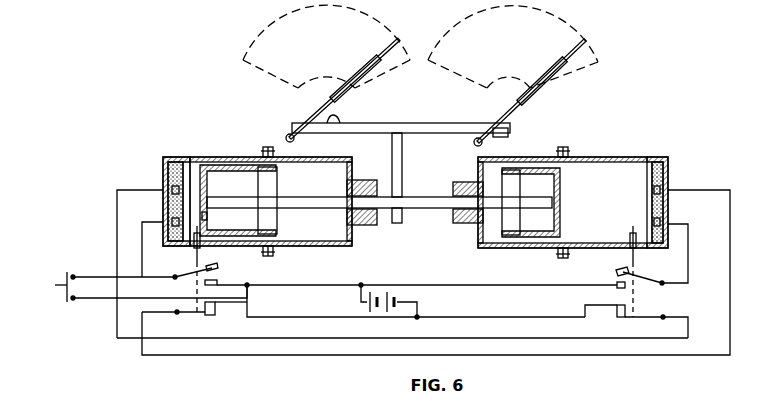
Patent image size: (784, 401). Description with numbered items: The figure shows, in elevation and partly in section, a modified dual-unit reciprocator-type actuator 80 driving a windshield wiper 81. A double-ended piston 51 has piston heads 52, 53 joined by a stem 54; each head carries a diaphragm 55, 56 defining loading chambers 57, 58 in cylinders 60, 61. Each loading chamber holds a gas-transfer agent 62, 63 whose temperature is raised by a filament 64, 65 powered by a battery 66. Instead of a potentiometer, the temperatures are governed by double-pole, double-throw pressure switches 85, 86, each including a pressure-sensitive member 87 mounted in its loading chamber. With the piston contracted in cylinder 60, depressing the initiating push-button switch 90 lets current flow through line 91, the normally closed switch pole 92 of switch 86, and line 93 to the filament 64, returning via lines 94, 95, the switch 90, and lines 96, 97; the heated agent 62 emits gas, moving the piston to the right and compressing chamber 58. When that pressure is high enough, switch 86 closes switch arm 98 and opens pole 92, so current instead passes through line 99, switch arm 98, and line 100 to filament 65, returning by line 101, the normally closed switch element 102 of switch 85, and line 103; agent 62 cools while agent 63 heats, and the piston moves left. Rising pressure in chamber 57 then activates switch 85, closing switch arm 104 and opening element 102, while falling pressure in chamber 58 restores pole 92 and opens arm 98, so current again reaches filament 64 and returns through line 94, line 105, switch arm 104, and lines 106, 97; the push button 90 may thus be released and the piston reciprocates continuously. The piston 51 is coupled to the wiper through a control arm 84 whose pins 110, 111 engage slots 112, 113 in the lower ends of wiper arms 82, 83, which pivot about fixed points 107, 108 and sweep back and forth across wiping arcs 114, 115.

The double-ended piston 51 is at (422, 209).
The piston head 52 is at (214, 186).
The piston head 53 is at (555, 192).
The stem 54 is at (326, 212).
The diaphragm 55 is at (260, 153).
The diaphragm 56 is at (559, 212).
The loading chamber 57 is at (191, 163).
The loading chamber 58 is at (618, 160).
The cylinder 60 is at (331, 251).
The cylinder 61 is at (498, 251).
The gas-transfer agent 62 is at (165, 172).
The gas-transfer agent 63 is at (671, 167).
The filament 64 is at (170, 206).
The filament 65 is at (667, 207).
The battery 66 is at (411, 299).
The dual-unit reciprocator-type actuator 80 is at (178, 155).
The windshield wiper 81 is at (406, 121).
The windshield-wiper arm 82 is at (356, 72).
The windshield-wiper arm 83 is at (553, 72).
The control arm 84 is at (402, 183).
The pressure switch 85 is at (190, 263).
The pressure switch 86 is at (622, 274).
The pressure-sensitive member 87 is at (209, 218).
The initiating push-button switch 90 is at (65, 282).
The line 91 is at (472, 315).
The switch pole 92 is at (640, 313).
The line 93 is at (428, 338).
The line 94 is at (136, 258).
The line 95 is at (104, 276).
The line 96 is at (106, 302).
The line 97 is at (326, 272).
The switch arm 98 is at (647, 277).
The line 99 is at (475, 285).
The line 100 is at (692, 264).
The line 101 is at (726, 311).
The switch element 102 is at (187, 314).
The line 103 is at (284, 315).
The switch arm 104 is at (222, 271).
The line 105 is at (165, 282).
The line 106 is at (219, 281).
The fixed point 107 is at (316, 99).
The fixed point 108 is at (516, 106).
The pin 110 is at (340, 119).
The pin 111 is at (508, 131).
The slot 112 is at (295, 139).
The slot 113 is at (482, 143).
The wiping arc 114 is at (378, 23).
The wiping arc 115 is at (585, 23).